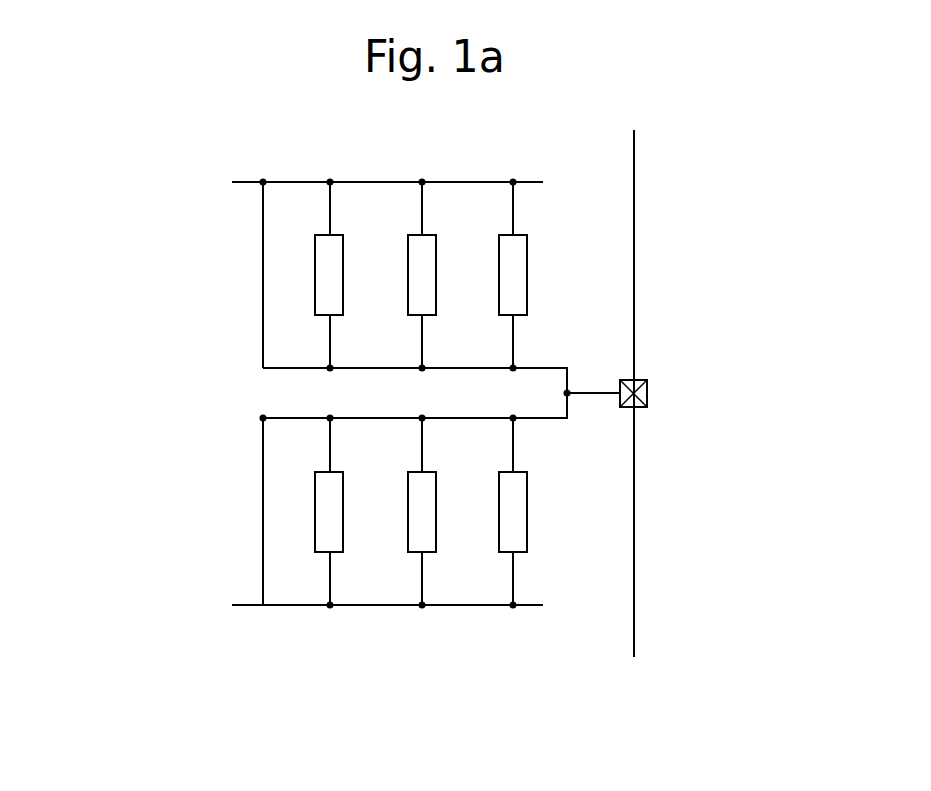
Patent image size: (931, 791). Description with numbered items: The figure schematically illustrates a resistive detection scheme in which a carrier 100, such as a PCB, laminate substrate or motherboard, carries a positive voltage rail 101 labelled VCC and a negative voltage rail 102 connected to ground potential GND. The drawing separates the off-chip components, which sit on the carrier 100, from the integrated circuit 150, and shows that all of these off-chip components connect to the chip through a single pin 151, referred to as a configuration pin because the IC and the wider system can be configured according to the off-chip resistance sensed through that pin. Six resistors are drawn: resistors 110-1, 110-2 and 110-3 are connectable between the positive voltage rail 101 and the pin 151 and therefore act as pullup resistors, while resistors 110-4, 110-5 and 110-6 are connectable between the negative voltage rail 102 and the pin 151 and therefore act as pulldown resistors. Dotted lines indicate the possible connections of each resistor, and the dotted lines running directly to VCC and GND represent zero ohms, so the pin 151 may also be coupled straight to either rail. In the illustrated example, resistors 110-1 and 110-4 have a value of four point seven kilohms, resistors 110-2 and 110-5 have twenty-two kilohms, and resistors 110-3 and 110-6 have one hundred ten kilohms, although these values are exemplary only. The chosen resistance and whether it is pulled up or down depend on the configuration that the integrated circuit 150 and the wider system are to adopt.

The carrier 100 is at (605, 745).
The positive voltage rail 101 is at (176, 176).
The negative voltage rail 102 is at (176, 600).
The resistor 110-1 is at (315, 235).
The resistor 110-2 is at (436, 235).
The resistor 110-3 is at (527, 238).
The resistor 110-4 is at (315, 472).
The resistor 110-5 is at (436, 472).
The resistor 110-6 is at (527, 478).
The integrated circuit 150 is at (714, 214).
The pin 151 is at (648, 393).